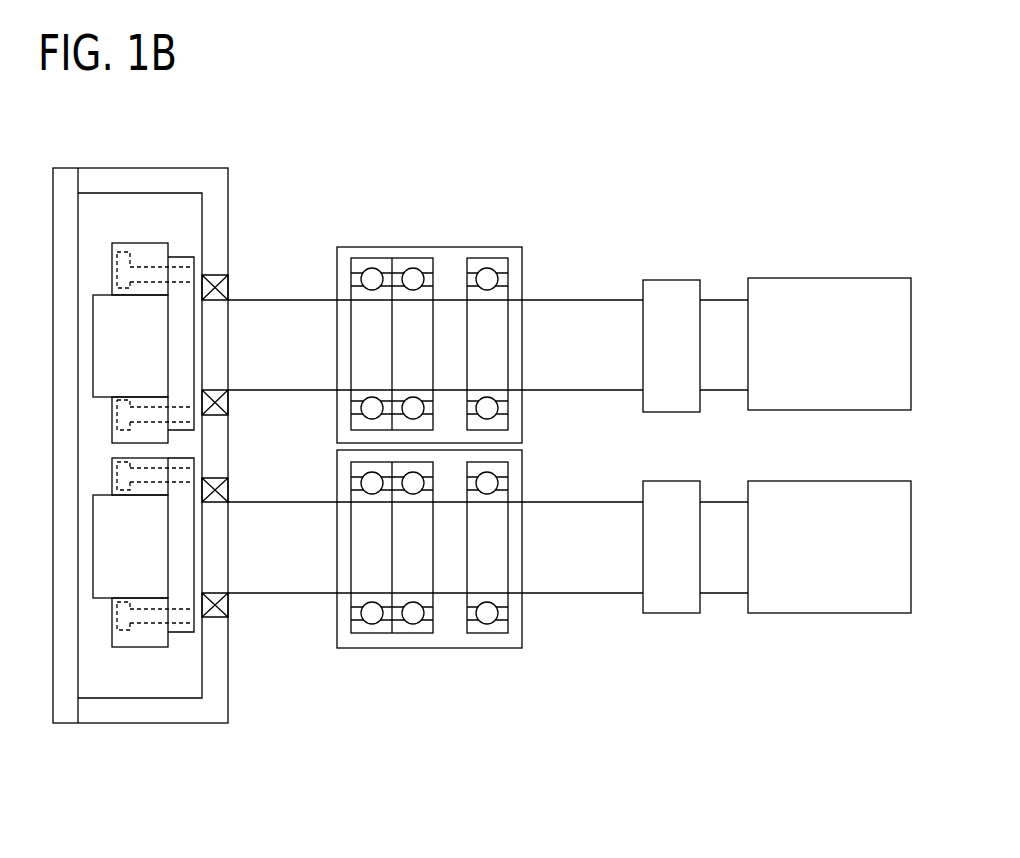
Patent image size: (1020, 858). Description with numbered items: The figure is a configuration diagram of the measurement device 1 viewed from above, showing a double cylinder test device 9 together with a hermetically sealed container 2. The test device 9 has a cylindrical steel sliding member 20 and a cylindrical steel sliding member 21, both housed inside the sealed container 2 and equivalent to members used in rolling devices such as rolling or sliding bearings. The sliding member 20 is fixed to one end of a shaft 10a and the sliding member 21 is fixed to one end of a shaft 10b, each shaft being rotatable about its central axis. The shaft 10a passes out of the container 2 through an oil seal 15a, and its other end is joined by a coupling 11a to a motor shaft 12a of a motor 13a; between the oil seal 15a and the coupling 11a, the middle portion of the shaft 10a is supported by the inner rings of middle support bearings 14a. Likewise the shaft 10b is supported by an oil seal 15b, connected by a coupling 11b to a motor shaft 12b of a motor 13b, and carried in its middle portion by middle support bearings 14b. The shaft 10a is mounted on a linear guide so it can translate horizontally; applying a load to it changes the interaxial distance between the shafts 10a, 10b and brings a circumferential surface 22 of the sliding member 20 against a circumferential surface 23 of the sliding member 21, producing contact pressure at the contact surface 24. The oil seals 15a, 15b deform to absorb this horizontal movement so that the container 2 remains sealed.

The measurement device 1 is at (356, 181).
The hermetically sealed container 2 is at (175, 182).
The double cylinder test device 9 is at (377, 665).
The shaft 10a is at (291, 320).
The shaft 10b is at (578, 573).
The coupling 11a is at (670, 296).
The coupling 11b is at (672, 595).
The motor shaft 12a is at (722, 320).
The motor shaft 12b is at (723, 573).
The motor 13a is at (882, 308).
The motor 13b is at (882, 583).
The middle support bearings 14a is at (528, 274).
The middle support bearings 14b is at (523, 613).
The oil seal 15a is at (229, 289).
The oil seal 15b is at (232, 609).
The cylindrical steel sliding member 20 is at (128, 253).
The cylindrical steel sliding member 21 is at (128, 640).
The circumferential surface 22 is at (121, 243).
The circumferential surface 23 is at (140, 648).
The contact surface 24 is at (128, 447).